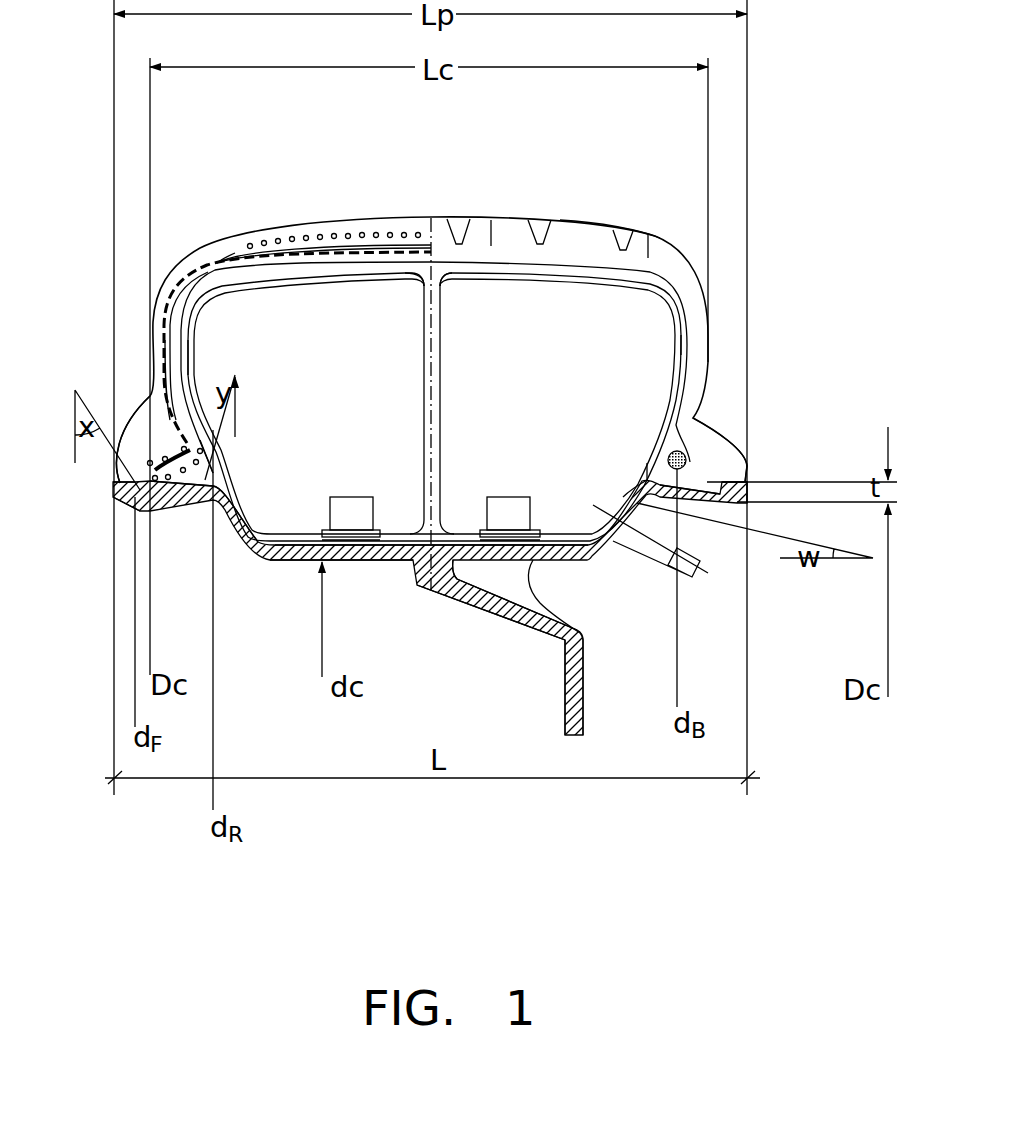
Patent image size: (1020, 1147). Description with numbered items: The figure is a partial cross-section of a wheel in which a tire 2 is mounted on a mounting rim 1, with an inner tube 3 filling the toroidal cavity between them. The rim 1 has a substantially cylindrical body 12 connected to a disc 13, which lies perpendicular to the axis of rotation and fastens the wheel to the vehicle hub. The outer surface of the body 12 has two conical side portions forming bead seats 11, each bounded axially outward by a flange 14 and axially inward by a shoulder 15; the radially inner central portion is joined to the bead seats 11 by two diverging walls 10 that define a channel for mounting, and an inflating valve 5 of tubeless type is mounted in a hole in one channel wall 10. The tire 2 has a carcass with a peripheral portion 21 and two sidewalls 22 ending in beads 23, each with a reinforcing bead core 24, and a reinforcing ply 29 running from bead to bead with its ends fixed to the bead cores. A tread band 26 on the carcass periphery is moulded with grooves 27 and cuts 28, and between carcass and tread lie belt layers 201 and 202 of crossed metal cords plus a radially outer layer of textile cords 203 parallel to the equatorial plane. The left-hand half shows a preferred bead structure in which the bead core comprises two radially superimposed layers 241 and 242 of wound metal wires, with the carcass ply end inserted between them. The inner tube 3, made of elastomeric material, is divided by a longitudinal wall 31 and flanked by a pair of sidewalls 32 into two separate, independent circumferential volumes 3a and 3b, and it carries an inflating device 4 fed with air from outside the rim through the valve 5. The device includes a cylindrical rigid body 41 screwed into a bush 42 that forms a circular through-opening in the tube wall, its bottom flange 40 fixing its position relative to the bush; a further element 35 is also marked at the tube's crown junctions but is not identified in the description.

The mounting rim 1 is at (258, 573).
The tire 2 is at (681, 232).
The inner tube 3 is at (677, 317).
The circumferential volume 3a is at (346, 387).
The circumferential volume 3b is at (521, 387).
The inflating device 4 is at (486, 481).
The inflating valve 5 is at (633, 543).
The wall 10 is at (247, 527).
The bead seat 11 is at (170, 500).
The cylindrical body 12 is at (357, 547).
The disc 13 is at (577, 697).
The flange 14 is at (121, 490).
The shoulder 15 is at (213, 477).
The peripheral portion 21 is at (517, 220).
The sidewall 22 is at (158, 347).
The bead 23 is at (130, 465).
The reinforcing bead core 24 is at (687, 457).
The tread band 26 is at (582, 244).
The groove 27 is at (458, 218).
The cut 28 is at (492, 231).
The reinforcing ply 29 is at (173, 298).
The longitudinal wall 31 is at (433, 350).
The inner tube sidewall 32 is at (181, 357).
The junction portion 35 is at (332, 264).
The bottom flange 40 is at (517, 587).
The rigid body 41 is at (523, 503).
The bush 42 is at (508, 543).
The belt layer 201 is at (223, 263).
The belt layer 202 is at (240, 252).
The textile cord layer 203 is at (295, 236).
The bead core layer 241 is at (162, 458).
The bead core layer 242 is at (142, 468).